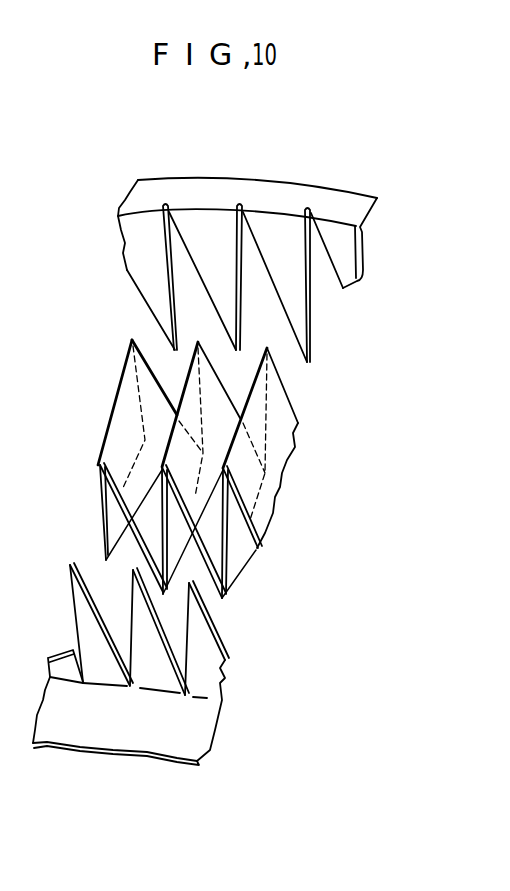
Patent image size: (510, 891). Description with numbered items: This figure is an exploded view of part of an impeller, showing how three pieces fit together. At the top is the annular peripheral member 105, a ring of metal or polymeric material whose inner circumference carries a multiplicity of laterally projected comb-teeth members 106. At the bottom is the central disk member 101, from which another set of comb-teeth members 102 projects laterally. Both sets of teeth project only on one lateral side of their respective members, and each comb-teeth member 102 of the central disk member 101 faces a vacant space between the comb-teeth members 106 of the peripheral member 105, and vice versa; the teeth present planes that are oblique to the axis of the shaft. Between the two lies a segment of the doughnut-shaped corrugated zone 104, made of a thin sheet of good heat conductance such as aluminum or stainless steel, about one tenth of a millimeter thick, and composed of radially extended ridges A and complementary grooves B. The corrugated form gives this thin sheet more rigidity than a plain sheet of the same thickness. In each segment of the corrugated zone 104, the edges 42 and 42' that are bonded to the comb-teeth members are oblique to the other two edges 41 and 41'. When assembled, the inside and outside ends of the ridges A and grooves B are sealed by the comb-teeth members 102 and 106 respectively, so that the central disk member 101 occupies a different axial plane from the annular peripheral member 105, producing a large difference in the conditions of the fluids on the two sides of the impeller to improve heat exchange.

The annular peripheral member 105 is at (213, 190).
The comb-teeth members 106 is at (220, 287).
The corrugated zone 104 is at (86, 324).
The ridges A is at (192, 480).
The complementary grooves B is at (183, 575).
The edge 41 is at (201, 403).
The edge 42 is at (281, 448).
The edge 41' is at (257, 535).
The edge 42' is at (278, 507).
The comb-teeth members 102 is at (100, 638).
The central disk member 101 is at (142, 740).